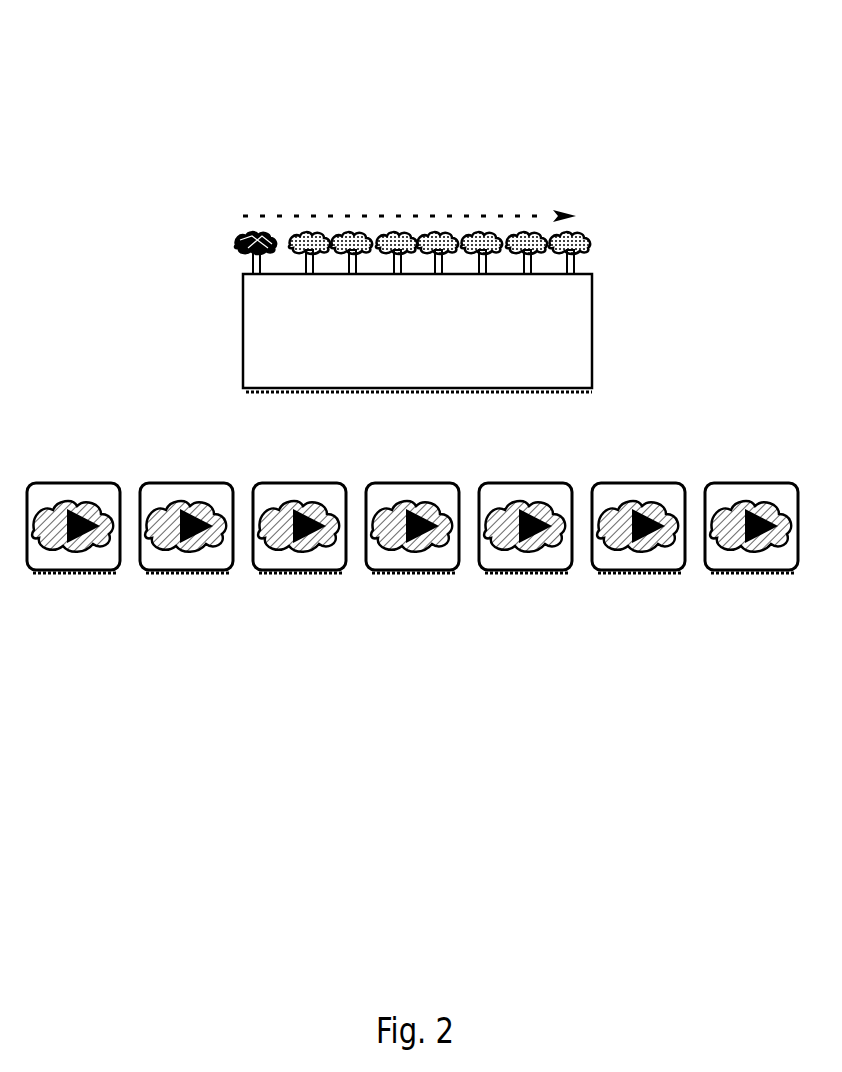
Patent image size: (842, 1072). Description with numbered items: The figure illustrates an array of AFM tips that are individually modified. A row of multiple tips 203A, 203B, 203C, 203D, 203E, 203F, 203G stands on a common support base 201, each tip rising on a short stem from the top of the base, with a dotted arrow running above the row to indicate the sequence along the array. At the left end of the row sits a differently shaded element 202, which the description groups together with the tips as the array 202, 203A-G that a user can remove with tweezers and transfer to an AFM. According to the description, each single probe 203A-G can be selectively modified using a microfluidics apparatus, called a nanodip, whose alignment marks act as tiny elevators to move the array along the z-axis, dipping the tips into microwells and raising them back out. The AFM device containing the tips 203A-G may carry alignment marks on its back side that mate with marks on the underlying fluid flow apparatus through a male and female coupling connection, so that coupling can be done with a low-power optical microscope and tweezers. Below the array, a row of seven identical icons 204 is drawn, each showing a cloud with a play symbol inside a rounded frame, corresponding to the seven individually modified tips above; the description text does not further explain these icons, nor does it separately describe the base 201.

The timeline / base 201 is at (295, 215).
The array 202 is at (236, 232).
The tip 203A is at (321, 218).
The tip 203B is at (358, 222).
The tip 203C is at (405, 222).
The tip 203D is at (447, 222).
The tip 203E is at (490, 222).
The tip 203F is at (533, 238).
The tip 203G is at (592, 246).
The media player icons 204 is at (730, 500).